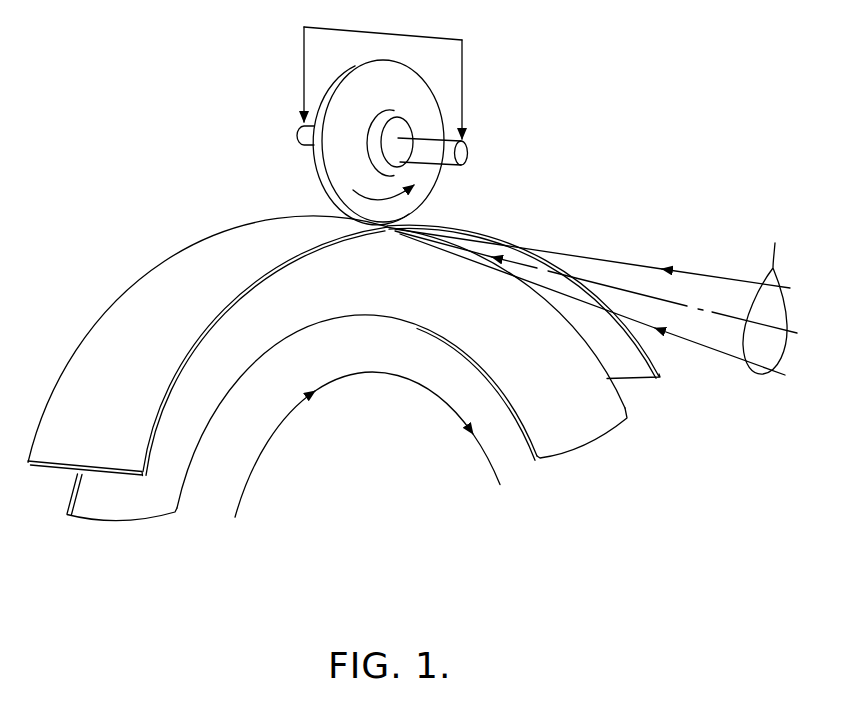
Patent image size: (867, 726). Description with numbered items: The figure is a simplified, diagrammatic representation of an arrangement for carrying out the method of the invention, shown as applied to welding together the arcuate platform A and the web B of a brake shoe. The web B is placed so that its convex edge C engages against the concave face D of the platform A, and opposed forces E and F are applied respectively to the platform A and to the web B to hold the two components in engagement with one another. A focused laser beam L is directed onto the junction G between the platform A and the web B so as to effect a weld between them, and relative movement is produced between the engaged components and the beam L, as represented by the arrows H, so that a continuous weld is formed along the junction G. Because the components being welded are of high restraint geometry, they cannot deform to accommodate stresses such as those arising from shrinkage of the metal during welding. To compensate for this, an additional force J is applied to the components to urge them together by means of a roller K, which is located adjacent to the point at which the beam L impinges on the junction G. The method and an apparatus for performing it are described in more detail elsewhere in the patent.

The arcuate platform A is at (150, 293).
The web B is at (158, 489).
The convex edge C is at (622, 409).
The concave face D is at (632, 355).
The force applied to platform E is at (213, 426).
The force applied to web F is at (235, 254).
The junction G is at (565, 310).
The arrows of relative movement H is at (367, 444).
The additional force J is at (383, 74).
The roller K is at (428, 180).
The focused laser beam L is at (596, 294).